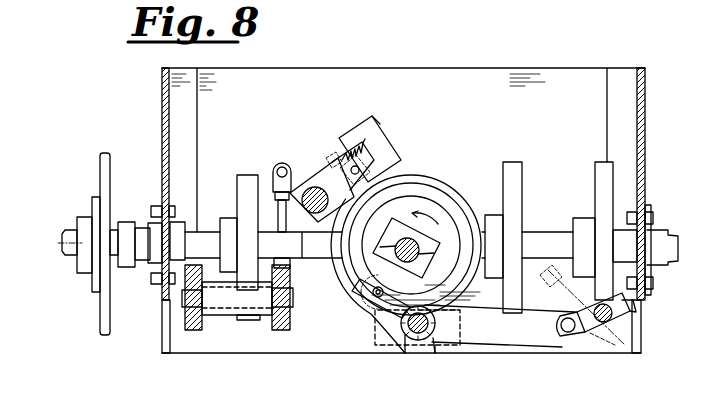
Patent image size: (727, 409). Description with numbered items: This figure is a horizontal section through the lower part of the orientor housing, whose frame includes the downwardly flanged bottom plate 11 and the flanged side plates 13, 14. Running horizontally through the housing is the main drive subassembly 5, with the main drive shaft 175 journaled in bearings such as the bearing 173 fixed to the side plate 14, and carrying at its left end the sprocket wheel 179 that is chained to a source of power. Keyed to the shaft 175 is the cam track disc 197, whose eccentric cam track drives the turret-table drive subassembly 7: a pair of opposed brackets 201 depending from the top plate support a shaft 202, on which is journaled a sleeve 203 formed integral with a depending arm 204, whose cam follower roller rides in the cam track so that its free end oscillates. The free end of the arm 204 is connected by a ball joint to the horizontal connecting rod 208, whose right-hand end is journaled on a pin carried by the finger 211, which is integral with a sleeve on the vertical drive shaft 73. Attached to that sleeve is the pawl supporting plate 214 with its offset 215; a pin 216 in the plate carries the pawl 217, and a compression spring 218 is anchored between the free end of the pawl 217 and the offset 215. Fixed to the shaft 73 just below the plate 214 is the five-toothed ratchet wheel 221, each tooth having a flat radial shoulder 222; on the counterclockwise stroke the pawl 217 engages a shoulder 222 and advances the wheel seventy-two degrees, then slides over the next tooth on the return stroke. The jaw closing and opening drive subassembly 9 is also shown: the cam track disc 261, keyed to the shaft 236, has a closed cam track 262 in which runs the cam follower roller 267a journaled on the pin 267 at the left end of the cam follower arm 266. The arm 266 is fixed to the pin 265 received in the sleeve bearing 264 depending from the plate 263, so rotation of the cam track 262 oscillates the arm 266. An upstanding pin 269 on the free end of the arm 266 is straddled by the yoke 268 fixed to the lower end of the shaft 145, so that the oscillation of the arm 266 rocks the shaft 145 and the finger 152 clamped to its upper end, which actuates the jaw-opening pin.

The main drive subassembly 5 is at (84, 190).
The turret-table drive subassembly 7 is at (289, 122).
The jaw closing and opening drive subassembly 9 is at (494, 364).
The bottom plate 11 is at (536, 125).
The side plate 13 is at (163, 128).
The side plate 14 is at (646, 145).
The drive shaft 73 is at (336, 196).
The shaft 145 is at (633, 316).
The finger 152 is at (556, 291).
The bearing 173 is at (660, 230).
The main drive shaft 175 is at (68, 255).
The sprocket wheel 179 is at (102, 304).
The cam track disc 197 is at (250, 180).
The brackets 201 is at (186, 318).
The shaft 202 is at (293, 302).
The sleeve 203 is at (228, 318).
The arm 204 is at (266, 320).
The connecting rod 208 is at (256, 245).
The finger 211 is at (303, 167).
The pawl supporting plate 214 is at (388, 141).
The offset 215 is at (371, 118).
The pin 216 is at (361, 170).
The pawl 217 is at (333, 160).
The compression spring 218 is at (353, 142).
The ratchet wheel 221 is at (303, 258).
The shoulder 222 is at (405, 246).
The shaft 236 is at (408, 268).
The cam track disc 261 is at (431, 179).
The cam track 262 is at (450, 206).
The plate 263 is at (378, 352).
The sleeve bearing 264 is at (405, 348).
The pin 265 is at (437, 350).
The cam follower arm 266 is at (498, 332).
The pin 267 is at (350, 287).
The cam follower roller 267a is at (374, 308).
The yoke 268 is at (597, 347).
The pin 269 is at (562, 337).